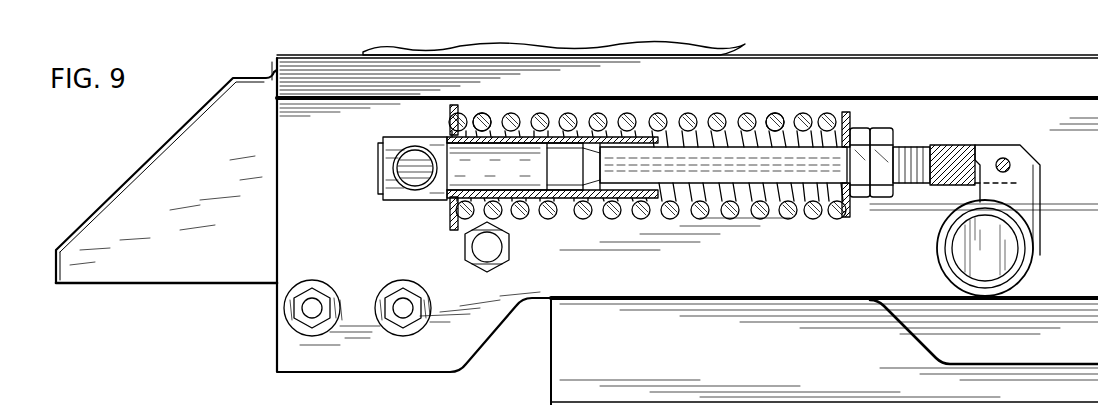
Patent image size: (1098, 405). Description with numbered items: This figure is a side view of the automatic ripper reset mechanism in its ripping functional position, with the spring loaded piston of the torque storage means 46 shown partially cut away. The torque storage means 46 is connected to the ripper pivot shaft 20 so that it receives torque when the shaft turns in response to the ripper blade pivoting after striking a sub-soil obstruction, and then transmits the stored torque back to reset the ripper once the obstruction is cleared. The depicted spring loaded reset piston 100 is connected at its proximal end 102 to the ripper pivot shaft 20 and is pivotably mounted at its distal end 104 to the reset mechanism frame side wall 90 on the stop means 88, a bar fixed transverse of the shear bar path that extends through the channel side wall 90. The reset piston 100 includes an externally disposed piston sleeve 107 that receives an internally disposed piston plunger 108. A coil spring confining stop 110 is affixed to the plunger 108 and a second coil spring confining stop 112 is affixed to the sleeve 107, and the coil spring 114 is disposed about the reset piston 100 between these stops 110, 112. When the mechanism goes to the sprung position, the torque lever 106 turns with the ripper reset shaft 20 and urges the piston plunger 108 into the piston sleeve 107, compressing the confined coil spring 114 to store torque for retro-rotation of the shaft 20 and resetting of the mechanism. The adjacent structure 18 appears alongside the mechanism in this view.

The lower block 18 is at (795, 357).
The ripper pivot shaft 20 is at (996, 262).
The torque storage means 46 is at (746, 217).
The stop means 88 is at (407, 168).
The channel side wall 90 is at (384, 240).
The spring loaded reset piston 100 is at (518, 155).
The proximal end 102 is at (958, 150).
The distal end 104 is at (400, 146).
The torque lever 106 is at (1040, 200).
The piston sleeve 107 is at (470, 130).
The piston plunger 108 is at (662, 158).
The coil spring confining stop 110 is at (852, 212).
The coil spring confining stop 112 is at (452, 120).
The coil spring 114 is at (770, 117).